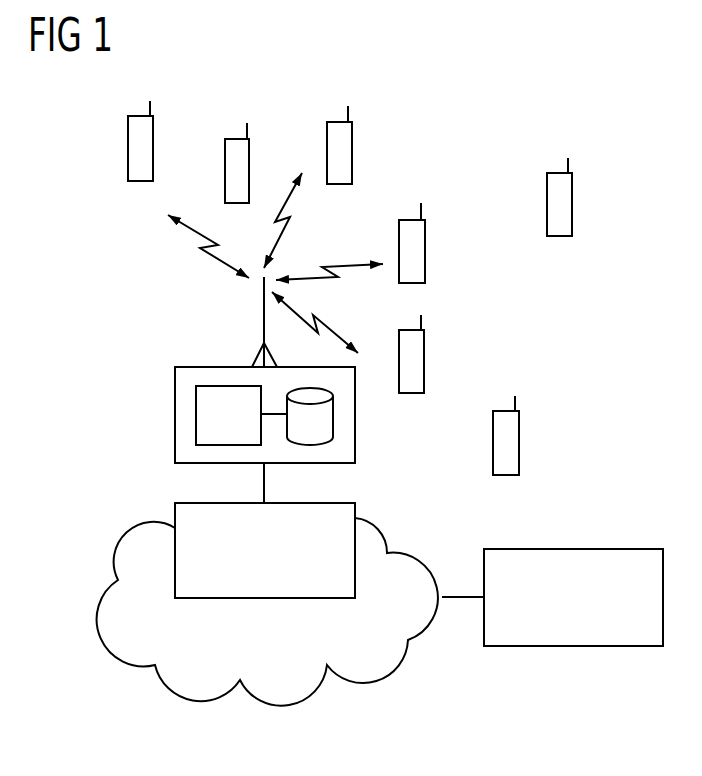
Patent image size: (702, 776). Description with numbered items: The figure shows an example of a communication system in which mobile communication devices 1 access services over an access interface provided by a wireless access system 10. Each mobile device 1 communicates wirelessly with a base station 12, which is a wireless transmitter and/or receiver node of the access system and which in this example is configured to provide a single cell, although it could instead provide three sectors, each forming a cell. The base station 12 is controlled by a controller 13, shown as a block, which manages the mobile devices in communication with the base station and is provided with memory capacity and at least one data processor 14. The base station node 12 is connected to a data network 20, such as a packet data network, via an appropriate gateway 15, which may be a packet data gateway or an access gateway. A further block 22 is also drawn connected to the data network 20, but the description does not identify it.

The mobile communication device 1 is at (426, 366).
The wireless access system 10 is at (137, 332).
The base station 12 is at (263, 332).
The controller 13 is at (355, 414).
The data processor 14 is at (196, 414).
The gateway 15 is at (173, 517).
The data network 20 is at (90, 624).
The remote unit 22 is at (572, 549).